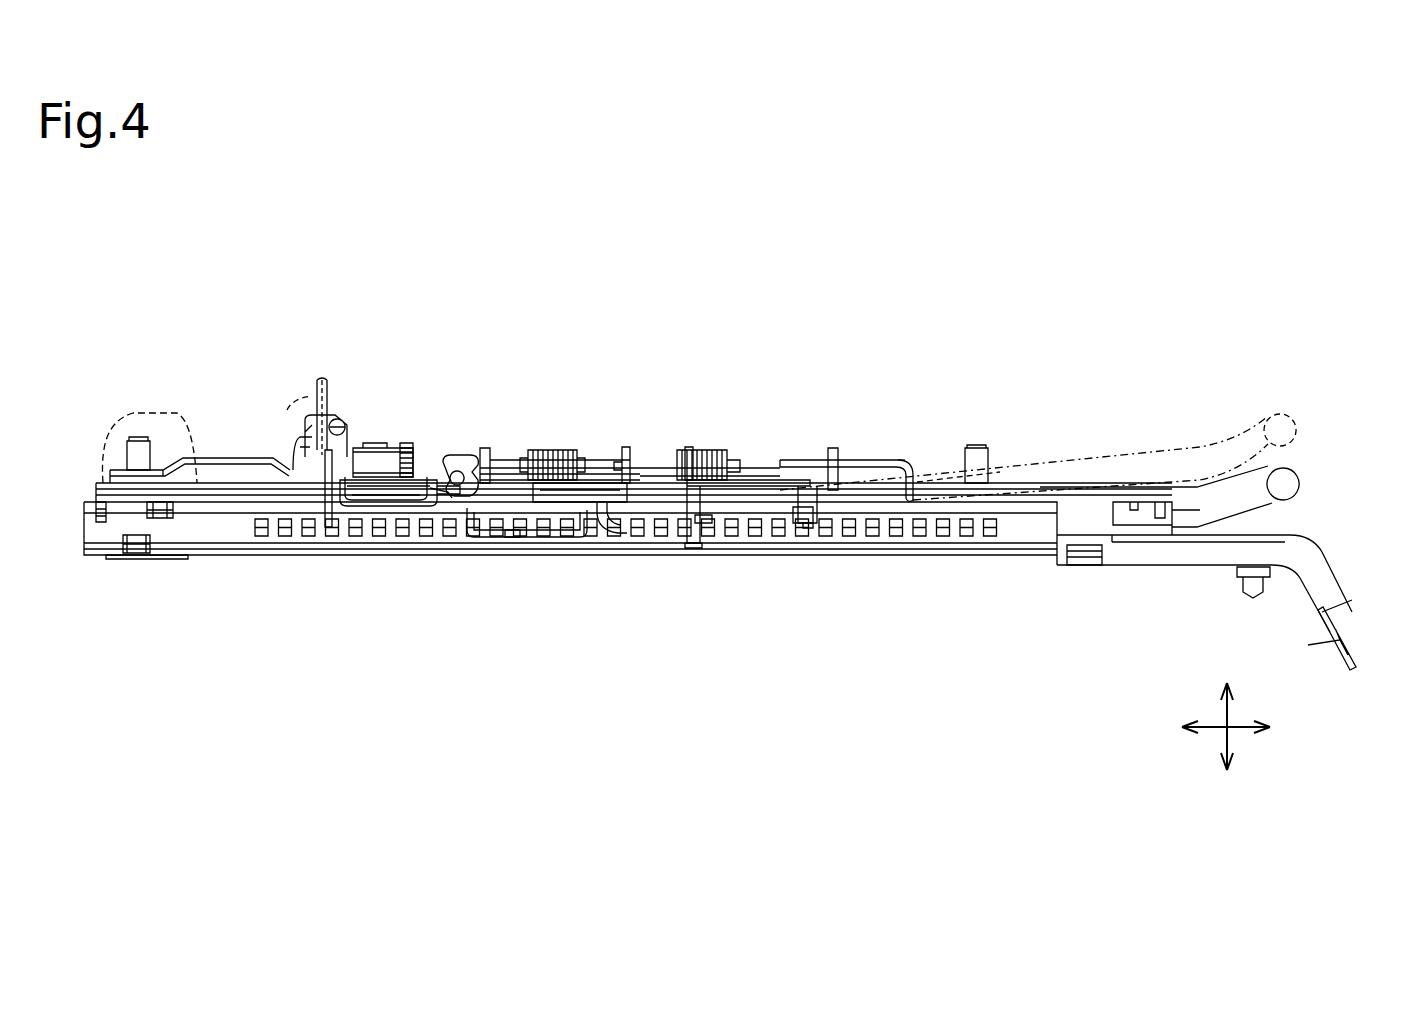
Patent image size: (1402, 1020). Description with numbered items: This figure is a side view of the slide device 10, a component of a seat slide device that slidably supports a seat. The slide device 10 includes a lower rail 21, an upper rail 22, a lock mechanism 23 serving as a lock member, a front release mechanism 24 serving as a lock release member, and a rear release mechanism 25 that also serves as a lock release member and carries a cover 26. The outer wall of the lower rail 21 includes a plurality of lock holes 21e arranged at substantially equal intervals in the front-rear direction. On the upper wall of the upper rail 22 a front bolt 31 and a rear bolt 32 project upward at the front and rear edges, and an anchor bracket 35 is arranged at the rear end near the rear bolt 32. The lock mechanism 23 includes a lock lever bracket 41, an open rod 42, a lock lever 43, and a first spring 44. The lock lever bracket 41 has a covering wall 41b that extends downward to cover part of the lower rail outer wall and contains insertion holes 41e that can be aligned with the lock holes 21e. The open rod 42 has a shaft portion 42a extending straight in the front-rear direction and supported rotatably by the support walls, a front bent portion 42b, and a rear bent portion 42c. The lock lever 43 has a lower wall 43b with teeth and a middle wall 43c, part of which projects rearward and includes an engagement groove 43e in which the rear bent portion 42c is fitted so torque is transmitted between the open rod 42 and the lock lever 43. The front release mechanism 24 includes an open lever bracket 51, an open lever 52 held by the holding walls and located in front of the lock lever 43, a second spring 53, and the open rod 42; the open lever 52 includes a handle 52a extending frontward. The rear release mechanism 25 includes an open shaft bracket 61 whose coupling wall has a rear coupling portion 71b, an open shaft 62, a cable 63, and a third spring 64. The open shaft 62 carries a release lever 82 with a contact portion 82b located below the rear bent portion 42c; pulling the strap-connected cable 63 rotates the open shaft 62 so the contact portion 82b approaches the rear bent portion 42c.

The slide device 10 is at (1147, 284).
The lower rail 21 is at (1009, 578).
The lock holes 21e is at (287, 540).
The upper rail 22 is at (85, 482).
The lock mechanism 23 is at (584, 388).
The front release mechanism 24 is at (734, 431).
The rear release mechanism 25 is at (368, 359).
The cover 26 is at (370, 432).
The front bolt 31 is at (977, 444).
The rear bolt 32 is at (128, 437).
The anchor bracket 35 is at (165, 398).
The lock lever bracket 41 is at (630, 526).
The covering wall 41b is at (602, 522).
The insertion holes 41e is at (520, 537).
The open rod 42 is at (890, 462).
The shaft portion 42a is at (865, 458).
The front bent portion 42b is at (917, 478).
The rear bent portion 42c is at (445, 492).
The lock lever 43 is at (580, 522).
The lower wall 43b is at (540, 540).
The middle wall 43c is at (600, 482).
The engagement groove 43e is at (455, 466).
The first spring 44 is at (545, 447).
The open lever bracket 51 is at (818, 518).
The open lever 52 is at (1155, 448).
The handle 52a is at (1300, 486).
The second spring 53 is at (708, 447).
The open shaft bracket 61 is at (326, 420).
The open shaft 62 is at (397, 444).
The cable 63 is at (285, 410).
The third spring 64 is at (414, 440).
The rear coupling portion 71b is at (110, 452).
The release lever 82 is at (422, 506).
The contact portion 82b is at (445, 482).